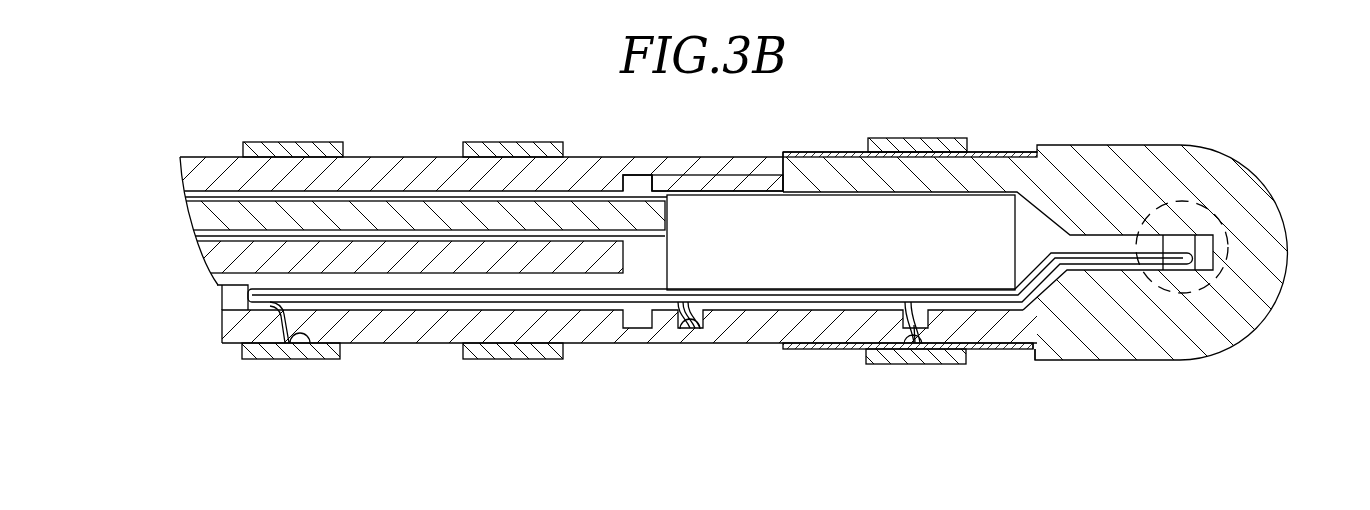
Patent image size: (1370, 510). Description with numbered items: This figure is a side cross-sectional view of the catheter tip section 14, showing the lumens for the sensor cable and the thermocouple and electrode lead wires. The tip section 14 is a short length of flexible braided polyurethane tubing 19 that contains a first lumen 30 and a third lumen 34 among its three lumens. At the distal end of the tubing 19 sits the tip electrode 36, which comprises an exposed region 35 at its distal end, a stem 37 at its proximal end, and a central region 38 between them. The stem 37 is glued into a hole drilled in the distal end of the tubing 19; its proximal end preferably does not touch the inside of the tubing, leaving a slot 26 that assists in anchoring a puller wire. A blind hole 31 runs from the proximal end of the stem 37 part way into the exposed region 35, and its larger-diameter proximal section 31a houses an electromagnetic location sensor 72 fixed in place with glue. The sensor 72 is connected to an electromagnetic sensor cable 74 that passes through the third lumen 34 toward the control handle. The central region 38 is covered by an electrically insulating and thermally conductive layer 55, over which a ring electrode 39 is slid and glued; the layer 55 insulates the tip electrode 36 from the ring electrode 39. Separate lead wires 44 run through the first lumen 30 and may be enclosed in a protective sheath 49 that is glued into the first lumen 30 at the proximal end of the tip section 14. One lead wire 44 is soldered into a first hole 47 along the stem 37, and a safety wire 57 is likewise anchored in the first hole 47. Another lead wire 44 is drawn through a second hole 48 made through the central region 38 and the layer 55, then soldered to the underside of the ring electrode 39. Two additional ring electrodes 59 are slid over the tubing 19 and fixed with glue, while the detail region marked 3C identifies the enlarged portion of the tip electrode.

The tip section 14 is at (418, 406).
The tubing 19 is at (375, 168).
The slot 26 is at (638, 181).
The first lumen 30 is at (612, 309).
The blind hole 31 is at (800, 307).
The proximal section 31a is at (852, 160).
The third lumen 34 is at (588, 194).
The exposed region 35 is at (1200, 152).
The tip electrode 36 is at (1262, 298).
The stem 37 is at (693, 184).
The central region 38 is at (859, 333).
The ring electrode 39 is at (945, 142).
The lead wire 44 is at (292, 330).
The first hole 47 is at (700, 329).
The second hole 48 is at (918, 332).
The protective sheath 49 is at (227, 300).
The electrically insulating and thermally conductive layer 55 is at (1023, 349).
The safety wire 57 is at (692, 326).
The additional ring electrodes 59 is at (283, 143).
The electromagnetic location sensor 72 is at (763, 212).
The electromagnetic sensor cable 74 is at (438, 208).
The detail view callout 3C is at (1225, 237).